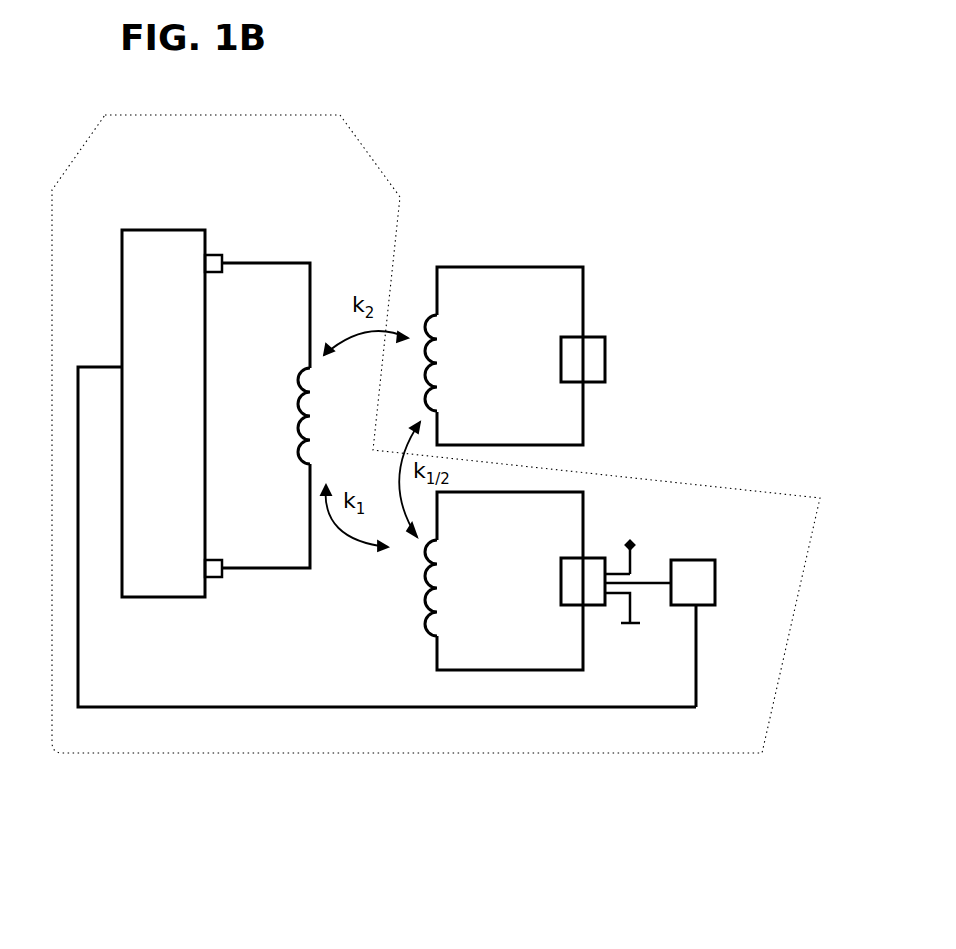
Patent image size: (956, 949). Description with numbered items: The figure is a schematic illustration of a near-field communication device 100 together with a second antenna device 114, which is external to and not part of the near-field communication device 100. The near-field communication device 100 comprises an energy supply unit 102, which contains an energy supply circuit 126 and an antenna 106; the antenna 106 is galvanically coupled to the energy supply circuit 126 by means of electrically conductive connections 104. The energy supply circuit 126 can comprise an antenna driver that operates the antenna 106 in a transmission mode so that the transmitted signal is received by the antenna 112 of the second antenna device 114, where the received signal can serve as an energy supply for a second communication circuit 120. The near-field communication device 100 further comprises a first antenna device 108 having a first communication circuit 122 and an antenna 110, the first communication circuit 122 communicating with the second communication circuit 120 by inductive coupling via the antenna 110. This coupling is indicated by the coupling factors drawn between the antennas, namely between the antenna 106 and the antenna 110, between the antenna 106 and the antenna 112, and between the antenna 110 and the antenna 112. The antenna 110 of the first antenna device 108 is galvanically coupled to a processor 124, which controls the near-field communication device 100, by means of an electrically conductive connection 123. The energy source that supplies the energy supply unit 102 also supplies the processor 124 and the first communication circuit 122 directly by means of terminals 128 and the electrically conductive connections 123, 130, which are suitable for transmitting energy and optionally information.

The near-field communication device 100 is at (373, 157).
The energy supply unit 102 is at (325, 235).
The electrically conductive connections 104 is at (260, 570).
The antenna 106 is at (296, 444).
The first antenna device 108 is at (602, 500).
The antenna 110 is at (445, 566).
The antenna 112 is at (445, 342).
The second antenna device 114 is at (600, 283).
The second communication circuit 120 is at (605, 357).
The first communication circuit 122 is at (560, 597).
The electrically conductive connection 123 is at (662, 584).
The processor 124 is at (715, 572).
The energy supply circuit 126 is at (205, 341).
The terminals 128 is at (633, 556).
The electrically conductive connection 130 is at (280, 707).